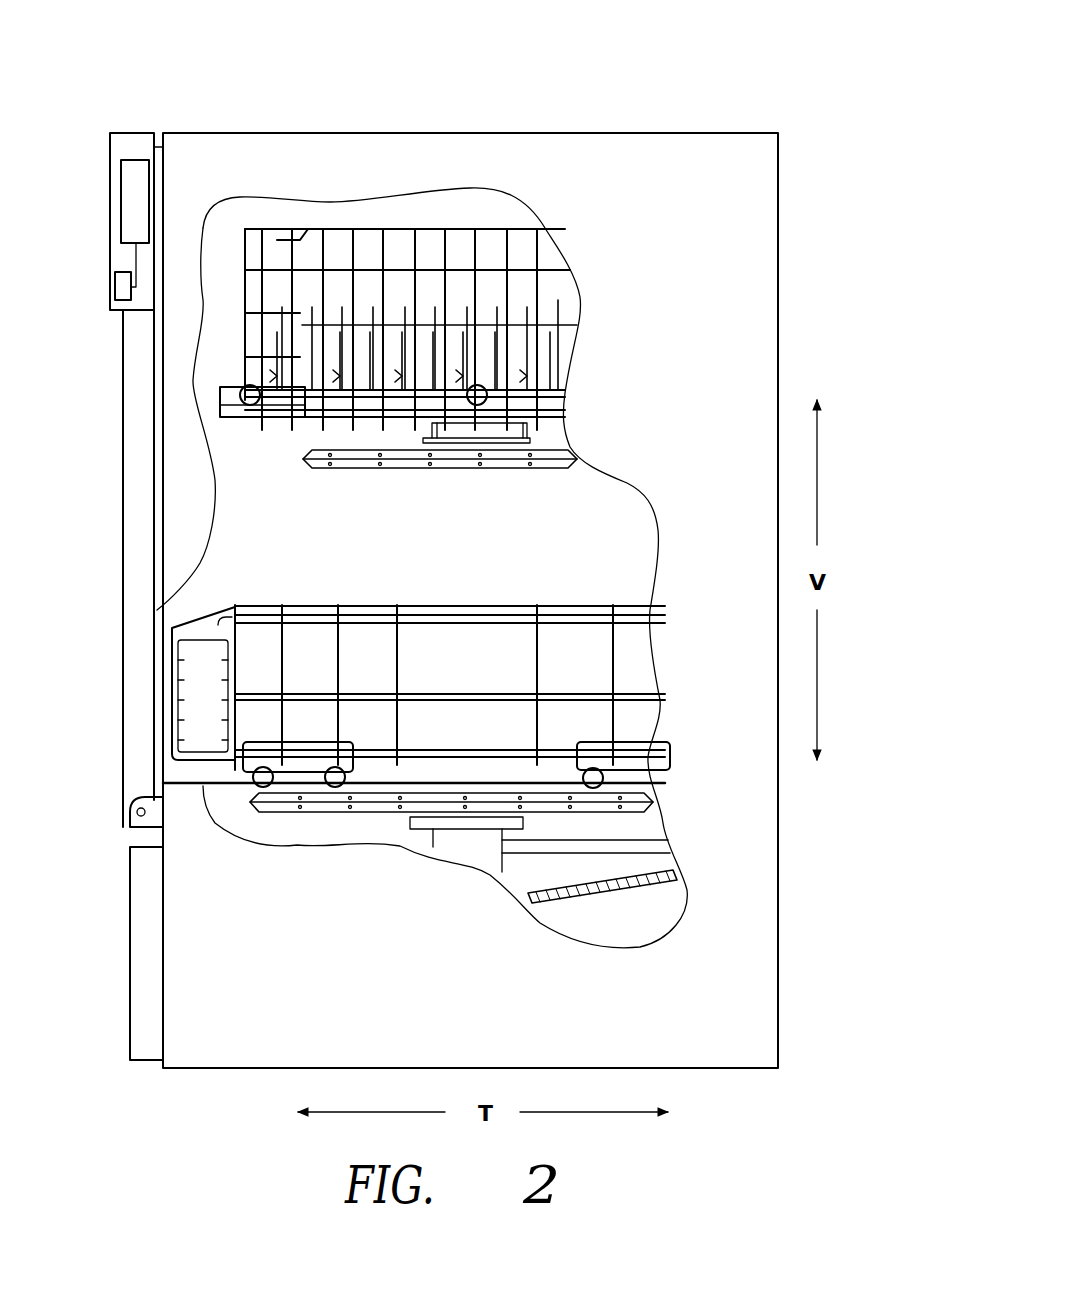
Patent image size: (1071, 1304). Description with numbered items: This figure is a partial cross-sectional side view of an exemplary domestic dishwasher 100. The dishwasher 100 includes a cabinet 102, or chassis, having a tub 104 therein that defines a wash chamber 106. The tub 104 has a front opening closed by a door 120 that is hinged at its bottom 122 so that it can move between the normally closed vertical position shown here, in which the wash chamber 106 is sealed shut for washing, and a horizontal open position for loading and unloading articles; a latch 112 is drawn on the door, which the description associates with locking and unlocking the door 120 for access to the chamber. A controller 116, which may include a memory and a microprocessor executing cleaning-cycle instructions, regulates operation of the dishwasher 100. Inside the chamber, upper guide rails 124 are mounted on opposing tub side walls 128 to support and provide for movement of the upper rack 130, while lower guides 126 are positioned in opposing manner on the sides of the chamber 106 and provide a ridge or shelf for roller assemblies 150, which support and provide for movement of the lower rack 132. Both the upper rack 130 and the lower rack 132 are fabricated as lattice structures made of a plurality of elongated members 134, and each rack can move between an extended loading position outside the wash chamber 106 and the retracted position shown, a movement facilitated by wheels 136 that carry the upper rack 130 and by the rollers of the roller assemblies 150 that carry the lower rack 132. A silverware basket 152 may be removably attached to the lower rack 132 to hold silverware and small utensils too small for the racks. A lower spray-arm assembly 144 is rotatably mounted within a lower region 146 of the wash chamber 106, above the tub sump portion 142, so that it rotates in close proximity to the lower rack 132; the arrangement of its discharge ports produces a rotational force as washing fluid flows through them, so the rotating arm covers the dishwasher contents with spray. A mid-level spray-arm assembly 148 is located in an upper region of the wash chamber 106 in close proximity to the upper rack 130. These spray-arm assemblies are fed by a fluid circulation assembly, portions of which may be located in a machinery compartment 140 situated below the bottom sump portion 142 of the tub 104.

The dishwasher 100 is at (662, 93).
The cabinet 102 is at (757, 252).
The tub 104 is at (332, 562).
The wash chamber 106 is at (250, 537).
The latch 112 is at (120, 292).
The controller 116 is at (138, 190).
The door 120 is at (137, 815).
The bottom 122 is at (130, 843).
The upper guide rails 124 is at (238, 415).
The lower guides 126 is at (193, 787).
The tub side walls 128 is at (290, 225).
The upper rack 130 is at (430, 228).
The lower rack 132 is at (432, 605).
The elongated members 134 is at (277, 427).
The wheels 136 is at (243, 387).
The machinery compartment 140 is at (637, 930).
The tub sump portion 142 is at (655, 905).
The lower spray-arm assembly 144 is at (336, 818).
The lower region 146 is at (560, 767).
The mid-level spray-arm assembly 148 is at (442, 487).
The roller assemblies 150 is at (232, 770).
The silverware basket 152 is at (193, 683).